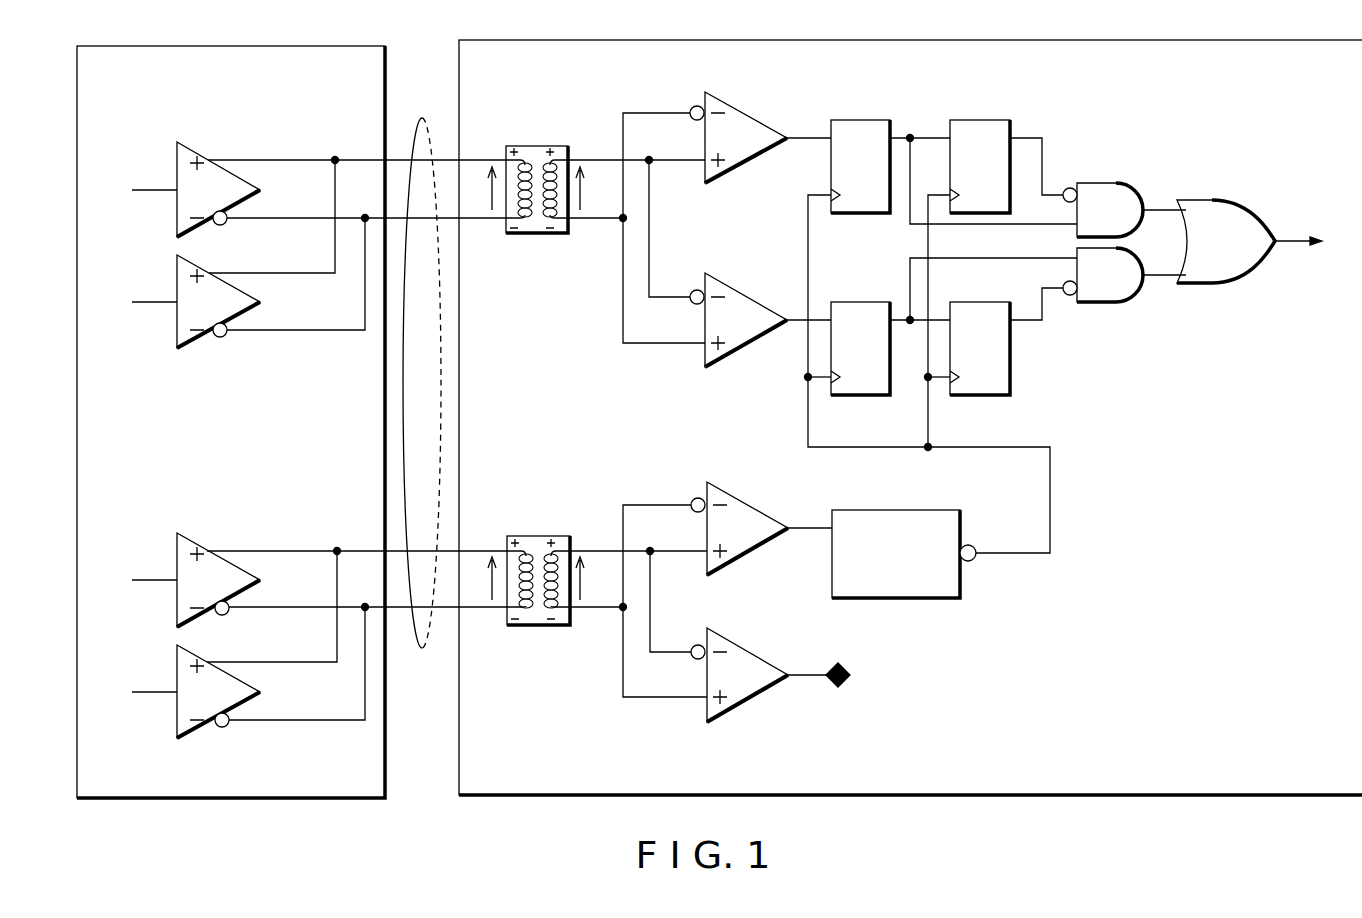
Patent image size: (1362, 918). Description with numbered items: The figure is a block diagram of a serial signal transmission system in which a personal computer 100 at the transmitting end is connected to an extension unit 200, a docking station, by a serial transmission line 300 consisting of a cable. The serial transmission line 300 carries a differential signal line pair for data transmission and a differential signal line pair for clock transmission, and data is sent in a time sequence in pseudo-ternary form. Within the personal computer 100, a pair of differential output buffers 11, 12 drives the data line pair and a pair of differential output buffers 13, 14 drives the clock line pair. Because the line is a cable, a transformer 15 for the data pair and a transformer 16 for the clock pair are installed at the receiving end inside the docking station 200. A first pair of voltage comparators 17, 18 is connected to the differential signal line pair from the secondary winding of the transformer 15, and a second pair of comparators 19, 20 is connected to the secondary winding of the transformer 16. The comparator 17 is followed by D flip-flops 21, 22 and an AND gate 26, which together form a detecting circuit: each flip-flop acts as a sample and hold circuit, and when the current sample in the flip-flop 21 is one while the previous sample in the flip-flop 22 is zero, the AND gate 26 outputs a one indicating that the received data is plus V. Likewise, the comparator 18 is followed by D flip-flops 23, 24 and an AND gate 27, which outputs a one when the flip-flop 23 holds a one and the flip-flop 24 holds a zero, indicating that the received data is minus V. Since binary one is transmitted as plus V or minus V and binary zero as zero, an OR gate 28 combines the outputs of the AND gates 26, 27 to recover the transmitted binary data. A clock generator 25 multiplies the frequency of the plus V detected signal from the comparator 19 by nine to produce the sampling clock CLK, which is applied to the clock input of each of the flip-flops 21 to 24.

The differential output buffer 11 is at (197, 143).
The differential output buffer 12 is at (205, 258).
The differential output buffer 13 is at (197, 534).
The differential output buffer 14 is at (205, 648).
The transformer 15 is at (535, 146).
The transformer 16 is at (535, 536).
The voltage comparator 17 is at (735, 95).
The voltage comparator 18 is at (735, 278).
The voltage comparator 19 is at (737, 485).
The voltage comparator 20 is at (737, 632).
The D flip-flop 21 is at (865, 120).
The D flip-flop 22 is at (985, 120).
The D flip-flop 23 is at (862, 395).
The D flip-flop 24 is at (978, 395).
The clock generator 25 is at (918, 510).
The AND gate 26 is at (1110, 183).
The AND gate 27 is at (1110, 302).
The OR gate 28 is at (1245, 200).
The personal computer 100 is at (275, 798).
The extension unit 200 is at (773, 797).
The serial transmission line 300 is at (422, 118).